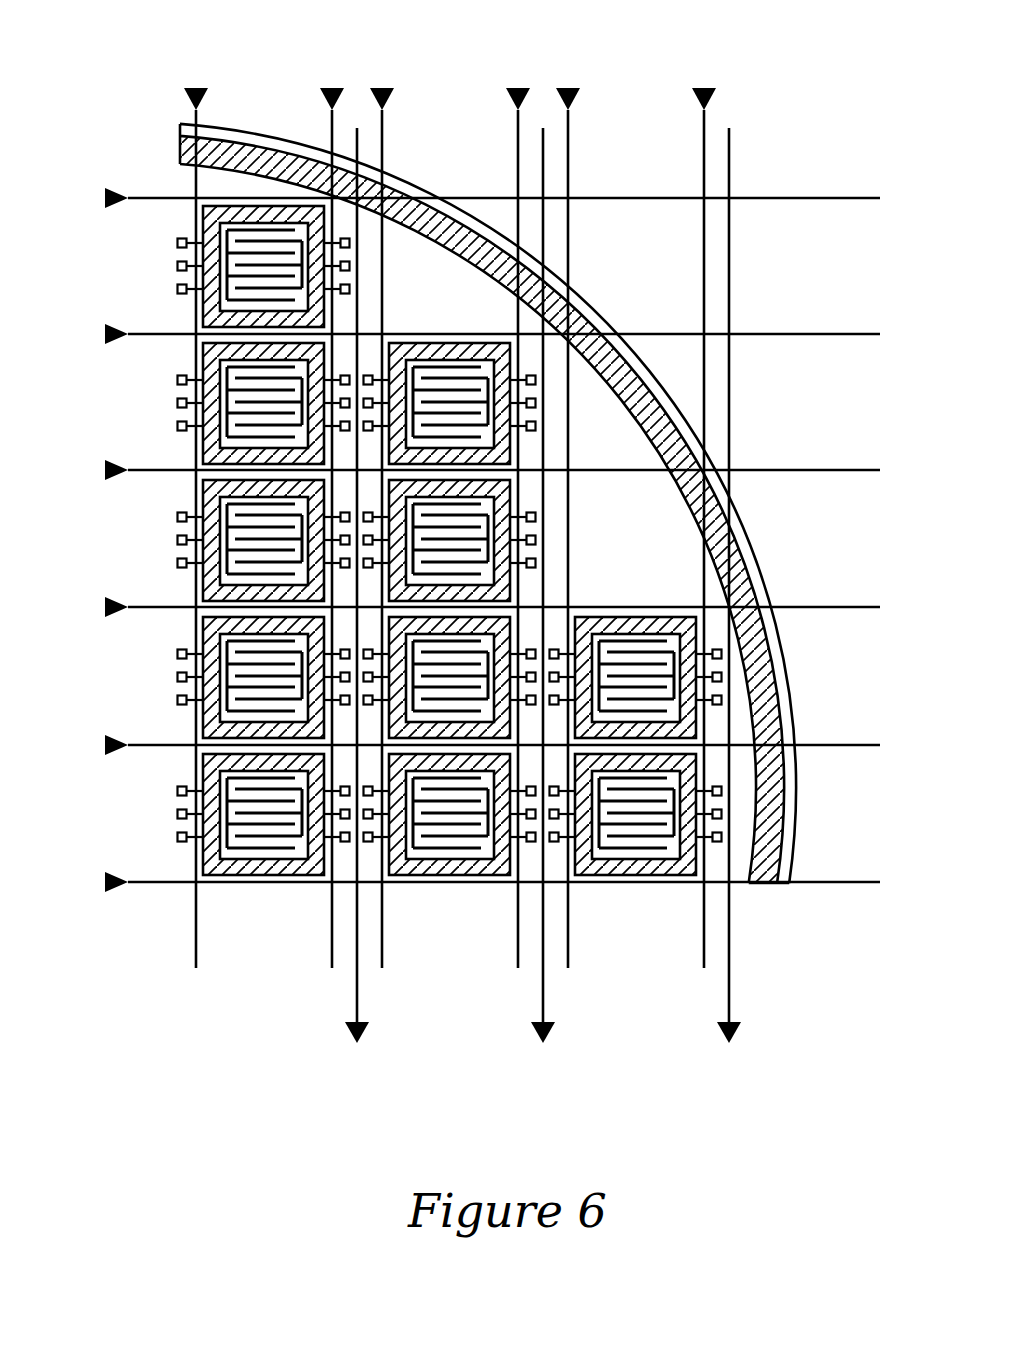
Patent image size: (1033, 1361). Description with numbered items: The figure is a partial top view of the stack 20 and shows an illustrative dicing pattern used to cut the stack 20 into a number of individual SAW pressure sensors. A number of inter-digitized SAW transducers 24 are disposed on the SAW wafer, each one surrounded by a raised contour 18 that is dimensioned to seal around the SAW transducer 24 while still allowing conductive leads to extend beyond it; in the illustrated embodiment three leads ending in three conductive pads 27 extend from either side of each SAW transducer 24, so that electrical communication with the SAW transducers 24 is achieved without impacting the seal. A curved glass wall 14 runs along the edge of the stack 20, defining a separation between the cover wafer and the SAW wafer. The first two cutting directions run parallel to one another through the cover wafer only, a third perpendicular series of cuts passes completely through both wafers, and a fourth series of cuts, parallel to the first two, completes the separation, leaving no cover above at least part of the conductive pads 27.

The stack 20 is at (150, 70).
The glass wall 14 is at (777, 798).
The raised contours 18 is at (213, 631).
The SAW transducers 24 is at (225, 720).
The conductive pads 27 is at (178, 266).